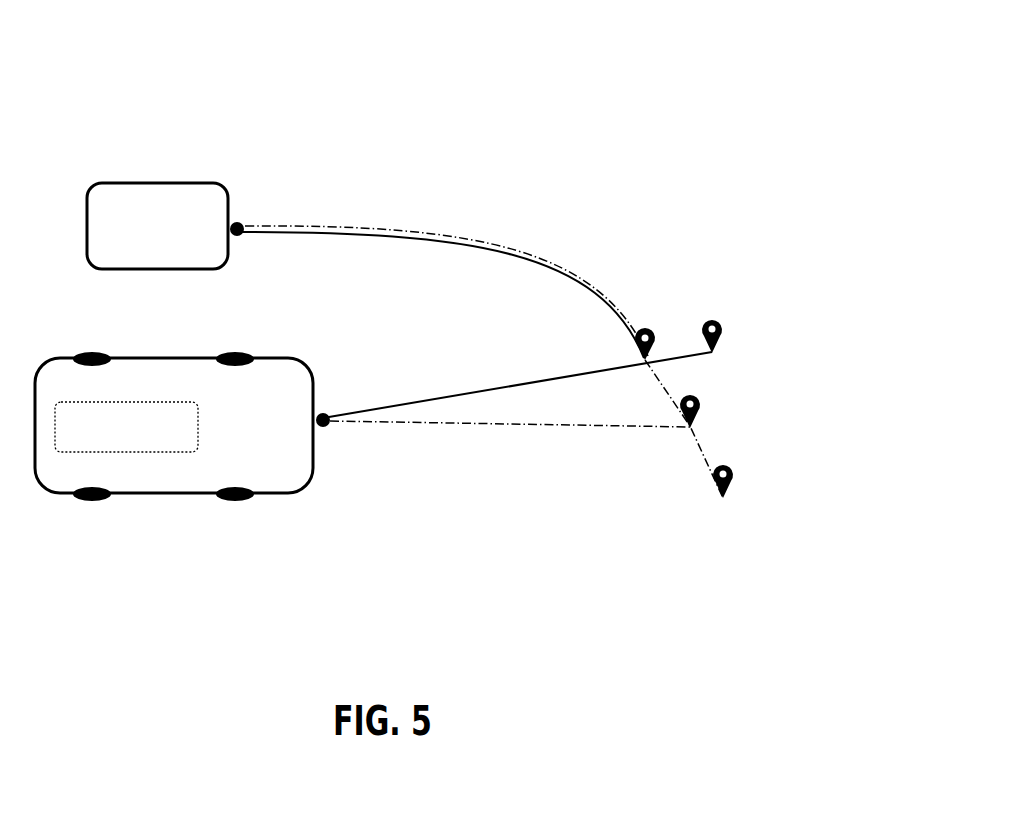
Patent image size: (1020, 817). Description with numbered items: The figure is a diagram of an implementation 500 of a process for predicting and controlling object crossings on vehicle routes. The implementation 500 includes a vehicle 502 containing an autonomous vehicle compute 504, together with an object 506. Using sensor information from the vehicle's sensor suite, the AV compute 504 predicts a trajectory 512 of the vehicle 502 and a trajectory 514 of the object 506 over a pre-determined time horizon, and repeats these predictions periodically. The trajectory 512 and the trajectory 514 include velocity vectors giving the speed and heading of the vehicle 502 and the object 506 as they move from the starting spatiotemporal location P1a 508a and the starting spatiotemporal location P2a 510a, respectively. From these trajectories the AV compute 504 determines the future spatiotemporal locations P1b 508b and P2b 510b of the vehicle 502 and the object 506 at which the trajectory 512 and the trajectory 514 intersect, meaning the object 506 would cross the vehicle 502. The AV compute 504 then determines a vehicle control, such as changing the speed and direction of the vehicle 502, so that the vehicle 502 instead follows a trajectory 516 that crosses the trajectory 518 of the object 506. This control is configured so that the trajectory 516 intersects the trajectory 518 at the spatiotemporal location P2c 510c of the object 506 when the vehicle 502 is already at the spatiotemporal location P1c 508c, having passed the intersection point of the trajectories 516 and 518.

The implementation 500 is at (747, 67).
The vehicle 502 is at (174, 426).
The autonomous vehicle compute 504 is at (126, 427).
The object 506 is at (157, 226).
The starting spatiotemporal location P1a 508a is at (336, 398).
The future spatiotemporal location P1b 508b is at (709, 415).
The spatiotemporal location P1c 508c is at (729, 346).
The starting spatiotemporal location P2a 510a is at (250, 210).
The future spatiotemporal location P2b 510b is at (724, 504).
The spatiotemporal location P2c 510c is at (644, 364).
The trajectory of vehicle 512 is at (510, 442).
The trajectory of object 514 is at (484, 352).
The trajectory of vehicle 516 is at (517, 382).
The trajectory of object 518 is at (440, 295).